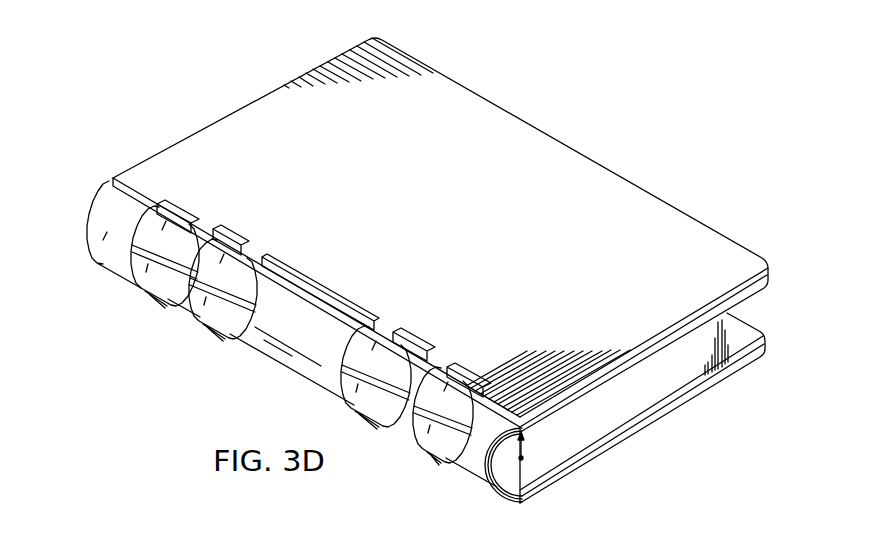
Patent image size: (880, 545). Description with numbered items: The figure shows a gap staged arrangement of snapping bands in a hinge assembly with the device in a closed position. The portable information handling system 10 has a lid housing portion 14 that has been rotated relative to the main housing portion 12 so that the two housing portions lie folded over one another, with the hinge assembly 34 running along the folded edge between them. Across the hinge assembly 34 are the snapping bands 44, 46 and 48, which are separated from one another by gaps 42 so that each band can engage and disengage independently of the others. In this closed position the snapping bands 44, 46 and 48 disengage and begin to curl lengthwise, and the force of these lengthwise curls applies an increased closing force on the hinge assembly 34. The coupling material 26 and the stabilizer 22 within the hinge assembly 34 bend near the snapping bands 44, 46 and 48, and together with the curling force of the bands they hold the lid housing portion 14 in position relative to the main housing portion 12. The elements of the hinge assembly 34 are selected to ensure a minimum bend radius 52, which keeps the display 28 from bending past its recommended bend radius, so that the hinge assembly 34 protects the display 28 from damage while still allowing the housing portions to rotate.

The portable information handling system 10 is at (226, 60).
The main housing portion 12 is at (598, 177).
The lid housing portion 14 is at (668, 419).
The stabilizer 22 is at (311, 305).
The coupling material 26 is at (421, 380).
The display 28 is at (598, 433).
The hinge assembly 34 is at (58, 203).
The gaps 42 is at (122, 232).
The snapping band 44 is at (152, 294).
The snapping band 46 is at (134, 258).
The snapping band 48 is at (180, 221).
The minimum bend radius 52 is at (524, 451).